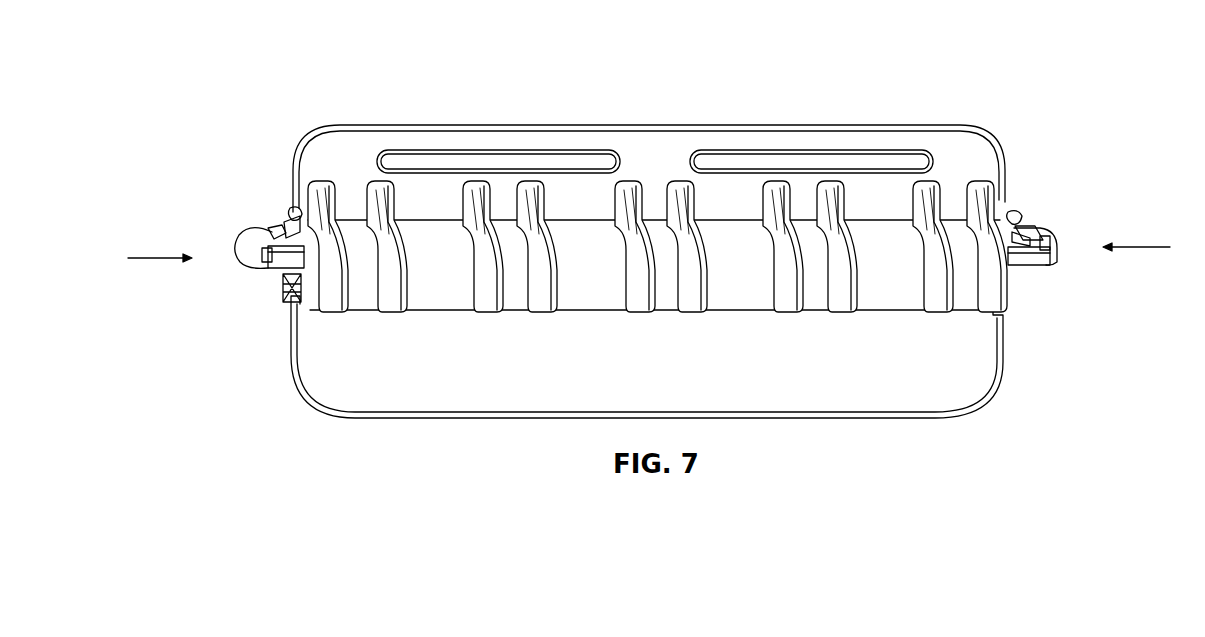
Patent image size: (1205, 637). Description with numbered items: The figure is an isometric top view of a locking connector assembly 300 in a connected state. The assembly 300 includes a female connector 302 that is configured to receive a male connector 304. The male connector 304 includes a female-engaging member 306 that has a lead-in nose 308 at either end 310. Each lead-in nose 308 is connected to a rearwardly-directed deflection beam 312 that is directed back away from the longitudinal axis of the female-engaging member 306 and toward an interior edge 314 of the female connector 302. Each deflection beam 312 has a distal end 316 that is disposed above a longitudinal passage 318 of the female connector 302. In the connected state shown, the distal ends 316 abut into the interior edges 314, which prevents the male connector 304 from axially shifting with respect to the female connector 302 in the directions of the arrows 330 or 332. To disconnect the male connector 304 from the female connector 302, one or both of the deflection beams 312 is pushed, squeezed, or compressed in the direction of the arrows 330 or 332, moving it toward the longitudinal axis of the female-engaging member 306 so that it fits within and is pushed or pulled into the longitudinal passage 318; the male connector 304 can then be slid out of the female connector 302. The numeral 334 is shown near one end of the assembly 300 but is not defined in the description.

The locking connector assembly 300 is at (268, 79).
The female connector 302 is at (307, 141).
The male connector 304 is at (294, 368).
The female-engaging member 306 is at (284, 268).
The lead-in nose 308 is at (250, 241).
The end 310 is at (262, 264).
The deflection beam 312 is at (270, 235).
The interior edge 314 is at (298, 213).
The distal end 316 is at (292, 223).
The longitudinal passage 318 is at (292, 303).
The arrow 330 is at (158, 260).
The arrow 332 is at (288, 231).
The tab 334 is at (1035, 236).